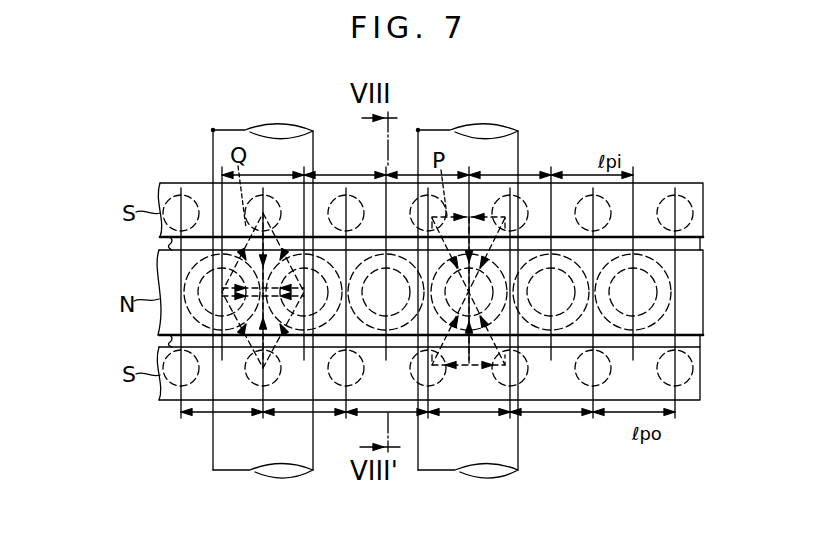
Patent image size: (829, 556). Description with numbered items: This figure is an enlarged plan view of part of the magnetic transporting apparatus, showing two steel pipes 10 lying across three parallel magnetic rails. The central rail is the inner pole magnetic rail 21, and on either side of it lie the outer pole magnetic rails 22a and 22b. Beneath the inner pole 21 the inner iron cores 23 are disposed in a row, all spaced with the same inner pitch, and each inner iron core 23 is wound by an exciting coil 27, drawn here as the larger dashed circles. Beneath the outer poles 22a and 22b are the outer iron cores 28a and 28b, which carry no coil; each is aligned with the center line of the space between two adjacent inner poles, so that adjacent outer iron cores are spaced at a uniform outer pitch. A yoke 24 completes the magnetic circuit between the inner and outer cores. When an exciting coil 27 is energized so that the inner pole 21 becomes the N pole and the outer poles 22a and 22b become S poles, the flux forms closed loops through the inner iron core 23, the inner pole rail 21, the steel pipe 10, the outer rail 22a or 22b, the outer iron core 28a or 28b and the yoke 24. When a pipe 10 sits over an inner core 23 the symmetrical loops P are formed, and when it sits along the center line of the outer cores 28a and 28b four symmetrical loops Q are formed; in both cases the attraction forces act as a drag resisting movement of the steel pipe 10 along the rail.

The steel pipe 10 is at (278, 478).
The inner pole magnetic rail 21 is at (645, 247).
The outer pole magnetic rail 22a is at (572, 183).
The outer pole magnetic rail 22b is at (703, 393).
The inner iron core 23 is at (626, 320).
The yoke 24 is at (703, 340).
The exciting coil 27 is at (665, 290).
The outer iron core 28a is at (683, 198).
The outer iron core 28b is at (682, 386).